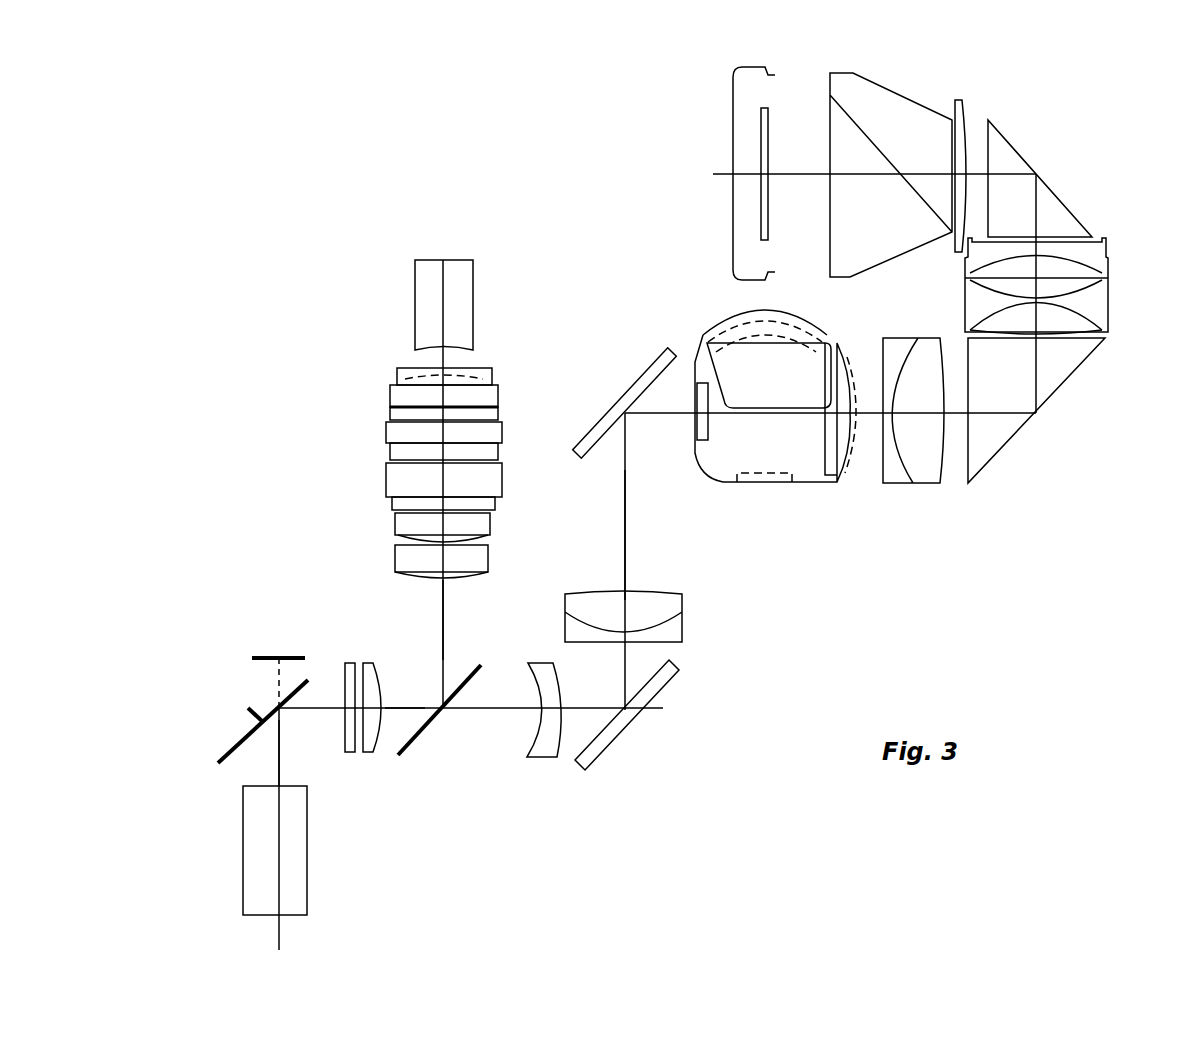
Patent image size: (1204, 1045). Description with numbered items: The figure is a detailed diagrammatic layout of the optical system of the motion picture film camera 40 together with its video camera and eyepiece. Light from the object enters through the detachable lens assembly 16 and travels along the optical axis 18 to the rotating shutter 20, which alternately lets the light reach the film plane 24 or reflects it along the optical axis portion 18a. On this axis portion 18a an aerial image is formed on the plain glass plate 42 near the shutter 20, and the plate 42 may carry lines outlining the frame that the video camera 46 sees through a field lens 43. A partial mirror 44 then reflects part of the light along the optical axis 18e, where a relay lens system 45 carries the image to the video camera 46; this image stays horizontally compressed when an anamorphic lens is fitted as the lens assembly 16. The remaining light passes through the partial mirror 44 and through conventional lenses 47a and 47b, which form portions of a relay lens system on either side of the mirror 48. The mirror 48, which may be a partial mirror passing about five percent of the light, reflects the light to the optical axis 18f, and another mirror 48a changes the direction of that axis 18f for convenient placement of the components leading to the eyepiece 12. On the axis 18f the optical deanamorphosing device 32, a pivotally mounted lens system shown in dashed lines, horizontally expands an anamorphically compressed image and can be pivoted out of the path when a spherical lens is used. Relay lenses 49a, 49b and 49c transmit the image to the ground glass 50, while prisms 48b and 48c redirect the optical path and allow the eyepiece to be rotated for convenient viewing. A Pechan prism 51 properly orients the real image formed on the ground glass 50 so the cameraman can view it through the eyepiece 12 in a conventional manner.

The eyepiece 12 is at (718, 112).
The detachable lens assembly 16 is at (307, 880).
The optical axis 18 is at (275, 757).
The optical axis portion 18a is at (397, 708).
The optical axis 18e is at (443, 618).
The optical axis 18f is at (628, 535).
The rotating shutter 20 is at (228, 750).
The film plane 24 is at (273, 660).
The optical deanamorphosing device 32 is at (813, 482).
The motion picture film camera 40 is at (802, 598).
The plain glass plate 42 is at (352, 753).
The field lens 43 is at (376, 752).
The partial mirror 44 is at (420, 735).
The relay lens system 45 is at (387, 432).
The video camera 46 is at (415, 315).
The lens 47a is at (542, 758).
The lens 47b is at (680, 620).
The mirror 48 is at (670, 687).
The mirror 48a is at (660, 362).
The prism 48b is at (1020, 430).
The prism 48c is at (1053, 192).
The relay lens 49a is at (933, 483).
The relay lens 49b is at (1108, 312).
The relay lens 49c is at (967, 105).
The ground glass 50 is at (772, 128).
The Pechan prism 51 is at (887, 87).